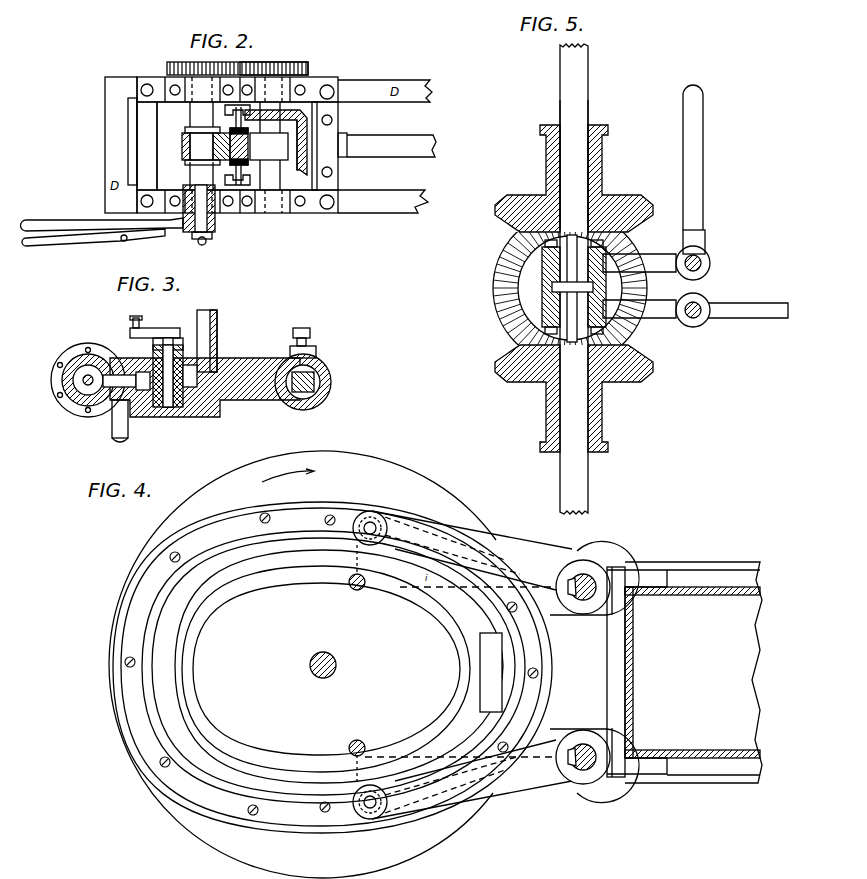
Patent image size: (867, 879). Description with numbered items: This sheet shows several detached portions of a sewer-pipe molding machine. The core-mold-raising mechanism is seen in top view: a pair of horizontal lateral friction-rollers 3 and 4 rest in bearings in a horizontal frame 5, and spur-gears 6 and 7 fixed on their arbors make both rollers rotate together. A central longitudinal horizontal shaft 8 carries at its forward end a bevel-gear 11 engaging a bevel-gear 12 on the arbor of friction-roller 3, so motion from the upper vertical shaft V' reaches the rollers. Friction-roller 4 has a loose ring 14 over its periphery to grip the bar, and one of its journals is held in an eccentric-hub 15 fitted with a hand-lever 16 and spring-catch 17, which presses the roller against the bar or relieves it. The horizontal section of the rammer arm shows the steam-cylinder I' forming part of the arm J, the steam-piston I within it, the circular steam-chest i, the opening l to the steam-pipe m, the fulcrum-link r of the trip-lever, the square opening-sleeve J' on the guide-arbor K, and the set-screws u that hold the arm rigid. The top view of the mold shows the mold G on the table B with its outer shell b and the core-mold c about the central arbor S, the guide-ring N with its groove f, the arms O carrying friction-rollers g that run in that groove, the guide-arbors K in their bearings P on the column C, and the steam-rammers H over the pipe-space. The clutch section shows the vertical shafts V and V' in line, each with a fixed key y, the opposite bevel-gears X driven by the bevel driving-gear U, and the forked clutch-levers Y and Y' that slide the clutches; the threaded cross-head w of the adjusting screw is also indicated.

In FIG. 2, the friction-roller 3 is at (269, 146).
In FIG. 2, the friction-roller 4 is at (202, 146).
In FIG. 2, the horizontal frame 5 is at (237, 146).
In FIG. 2, the spur-gear 6 is at (237, 62).
In FIG. 2, the spur-gear 7 is at (274, 62).
In FIG. 2, the central longitudinal horizontal shaft 8 is at (387, 145).
In FIG. 2, the bevel-gear 11 is at (289, 150).
In FIG. 2, the bevel-gear 12 is at (278, 137).
In FIG. 2, the loose ring 14 is at (178, 146).
In FIG. 2, the eccentric-hub 15 is at (207, 215).
In FIG. 2, the hand-lever 16 is at (102, 219).
In FIG. 2, the spring-catch 17 is at (93, 241).
In FIG. 3, the steam-piston I is at (83, 380).
In FIG. 3, the steam-cylinder I' is at (81, 380).
In FIG. 3, the circular steam-chest i is at (144, 381).
In FIG. 3, the fulcrum-link r is at (156, 361).
In FIG. 3, the steam-pipe m is at (207, 335).
In FIG. 3, the opening l is at (193, 376).
In FIG. 3, the vertical guide-arbor K is at (292, 367).
In FIG. 4, the vertical guide-arbor K is at (594, 671).
In FIG. 3, the set-screw u is at (306, 337).
In FIG. 3, the arm J is at (205, 389).
In FIG. 3, the square opening-sleeve J' is at (309, 382).
In FIG. 5, the vertical shaft V is at (574, 279).
In FIG. 5, the vertical shaft V' is at (574, 165).
In FIG. 5, the bevel-gear X is at (579, 288).
In FIG. 5, the bevel driving-gear U is at (560, 288).
In FIG. 5, the threaded cross-head w is at (566, 287).
In FIG. 5, the fixed key y is at (572, 289).
In FIG. 5, the forked clutch-lever Y is at (695, 310).
In FIG. 5, the lever Y' is at (656, 182).
In FIG. 4, the table B is at (302, 664).
In FIG. 4, the guide-ring N is at (332, 667).
In FIG. 4, the groove f is at (331, 664).
In FIG. 4, the mold G is at (326, 661).
In FIG. 4, the outer shell or mold b is at (331, 666).
In FIG. 4, the core-mold c is at (326, 669).
In FIG. 4, the vertical central arbor S is at (323, 670).
In FIG. 4, the steam-rammer H is at (355, 665).
In FIG. 4, the friction-roller g is at (370, 665).
In FIG. 4, the arm O is at (472, 665).
In FIG. 4, the bearing P is at (637, 672).
In FIG. 4, the column C is at (693, 672).